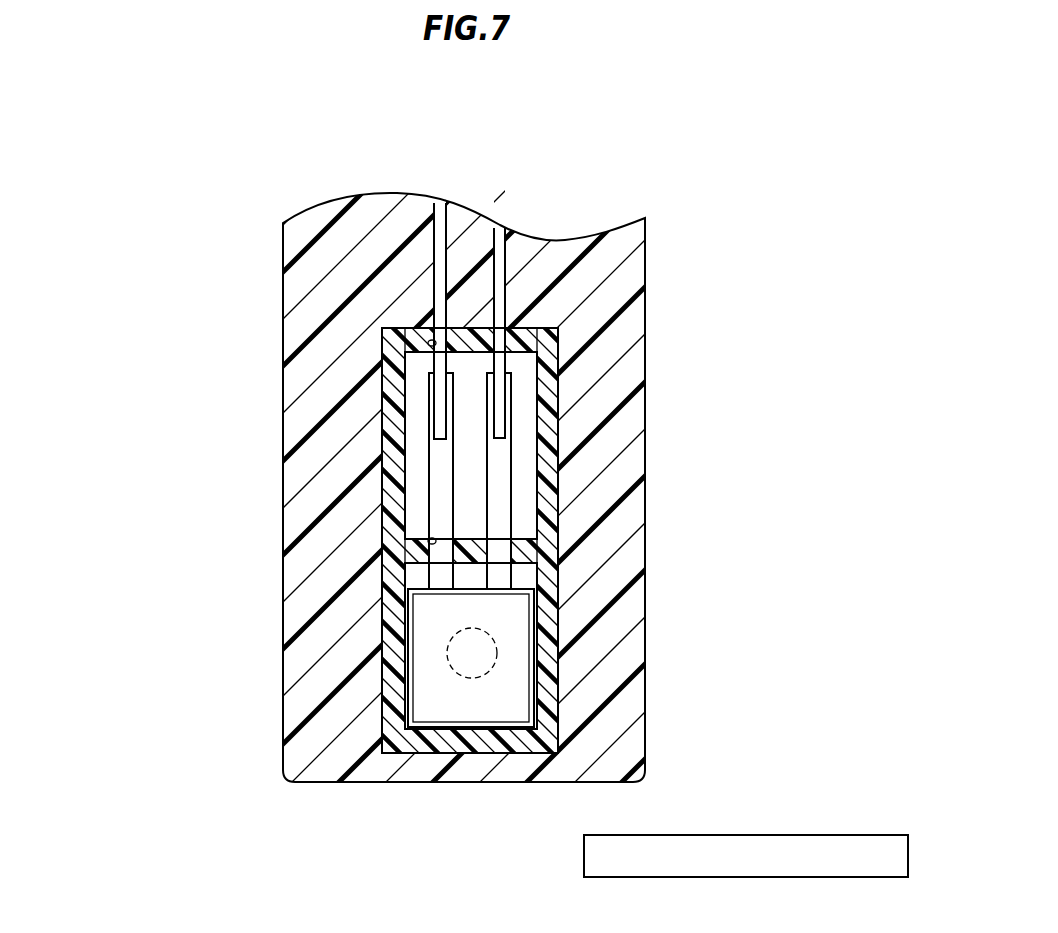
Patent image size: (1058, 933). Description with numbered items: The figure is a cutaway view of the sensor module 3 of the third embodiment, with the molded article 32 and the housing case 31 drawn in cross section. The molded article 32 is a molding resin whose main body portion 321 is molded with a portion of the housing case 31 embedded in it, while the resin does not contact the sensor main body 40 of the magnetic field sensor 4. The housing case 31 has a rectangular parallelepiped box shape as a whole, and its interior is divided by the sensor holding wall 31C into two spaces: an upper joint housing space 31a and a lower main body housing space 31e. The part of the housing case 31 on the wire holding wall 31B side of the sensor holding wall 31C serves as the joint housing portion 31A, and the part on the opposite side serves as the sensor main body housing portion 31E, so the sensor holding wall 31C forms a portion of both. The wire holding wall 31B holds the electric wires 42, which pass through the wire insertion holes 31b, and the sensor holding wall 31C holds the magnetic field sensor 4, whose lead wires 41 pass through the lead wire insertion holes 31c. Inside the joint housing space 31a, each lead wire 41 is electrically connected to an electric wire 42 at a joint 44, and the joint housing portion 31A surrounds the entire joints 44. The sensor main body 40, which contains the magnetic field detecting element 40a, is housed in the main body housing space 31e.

The sensor module 3 is at (300, 200).
The magnetic field sensor 4 is at (828, 473).
The housing case 31 is at (559, 329).
The joint housing portion 31A is at (560, 343).
The joint housing space 31a is at (528, 392).
The wire holding wall 31B is at (418, 340).
The wire insertion hole 31b is at (428, 346).
The sensor holding wall 31C is at (417, 550).
The lead wire insertion hole 31c is at (428, 538).
The sensor main body housing portion 31E is at (562, 679).
The main body housing space 31e is at (534, 727).
The molded article 32 is at (638, 235).
The main body portion 321 is at (643, 262).
The sensor main body 40 is at (523, 605).
The magnetic field detecting element 40a is at (497, 657).
The lead wire 41 is at (443, 500).
The electric wire 42 is at (499, 228).
The joint 44 is at (462, 408).